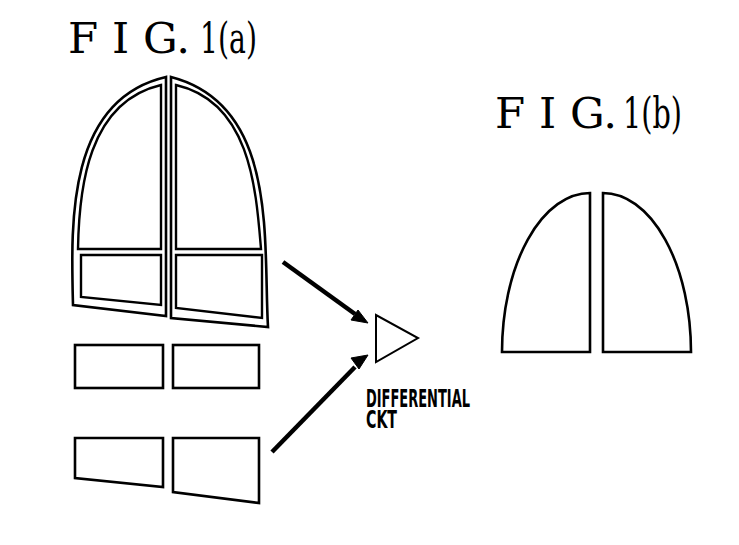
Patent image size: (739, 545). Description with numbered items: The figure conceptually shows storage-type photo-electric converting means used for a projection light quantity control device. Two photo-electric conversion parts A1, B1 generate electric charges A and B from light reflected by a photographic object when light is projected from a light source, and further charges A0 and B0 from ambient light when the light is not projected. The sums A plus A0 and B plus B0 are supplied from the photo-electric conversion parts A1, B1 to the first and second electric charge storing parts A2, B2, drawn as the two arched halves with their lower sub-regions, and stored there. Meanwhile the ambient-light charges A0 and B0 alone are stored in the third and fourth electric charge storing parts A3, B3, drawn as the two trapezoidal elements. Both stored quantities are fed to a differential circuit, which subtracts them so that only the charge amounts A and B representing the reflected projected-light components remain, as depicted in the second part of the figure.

The second electric charge storing part B2 is at (119, 196).
The first electric charge storing part A2 is at (219, 202).
The amount of electric charge B0 is at (121, 280).
The amount of electric charge A0 is at (219, 286).
The photo-electric conversion part B1 is at (75, 360).
The photo-electric conversion part A1 is at (259, 360).
The fourth electric charge storing part B3 is at (84, 480).
The third electric charge storing part A3 is at (259, 483).